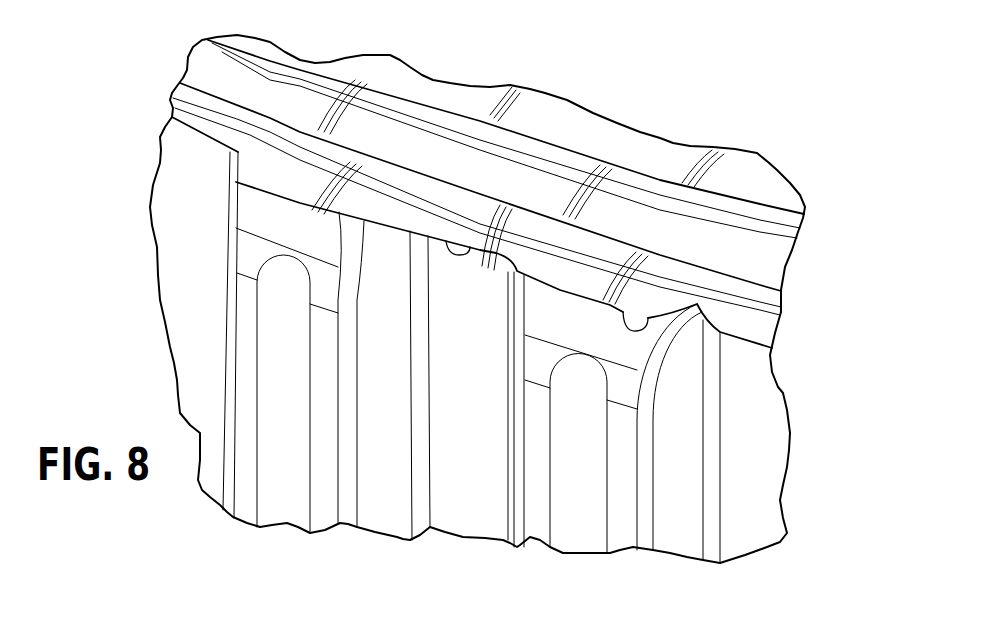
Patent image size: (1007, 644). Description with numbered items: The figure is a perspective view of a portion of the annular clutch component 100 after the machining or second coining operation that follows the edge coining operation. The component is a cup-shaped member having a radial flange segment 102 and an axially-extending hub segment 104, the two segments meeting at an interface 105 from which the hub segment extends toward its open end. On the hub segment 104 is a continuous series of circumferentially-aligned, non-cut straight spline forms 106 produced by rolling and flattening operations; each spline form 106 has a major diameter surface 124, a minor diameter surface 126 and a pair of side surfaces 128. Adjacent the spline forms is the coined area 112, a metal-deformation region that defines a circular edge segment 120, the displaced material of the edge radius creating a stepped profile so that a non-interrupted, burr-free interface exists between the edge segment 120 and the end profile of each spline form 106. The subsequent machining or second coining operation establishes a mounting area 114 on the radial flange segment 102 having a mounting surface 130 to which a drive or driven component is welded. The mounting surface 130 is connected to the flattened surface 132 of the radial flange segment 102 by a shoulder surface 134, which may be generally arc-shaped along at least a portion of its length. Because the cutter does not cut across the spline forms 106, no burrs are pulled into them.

The annular clutch component 100 is at (800, 112).
The radial flange segment 102 is at (596, 124).
The axially-extending hub segment 104 is at (614, 513).
The interface 105 is at (229, 116).
The spline forms 106 is at (237, 510).
The coined area 112 is at (616, 260).
The mounting area 114 is at (460, 165).
The circular edge segment 120 is at (300, 187).
The major diameter surface 124 is at (650, 310).
The minor diameter surface 126 is at (452, 240).
The side surfaces 128 is at (520, 315).
The mounting surface 130 is at (373, 138).
The flattened surface 132 is at (534, 108).
The shoulder surface 134 is at (337, 82).